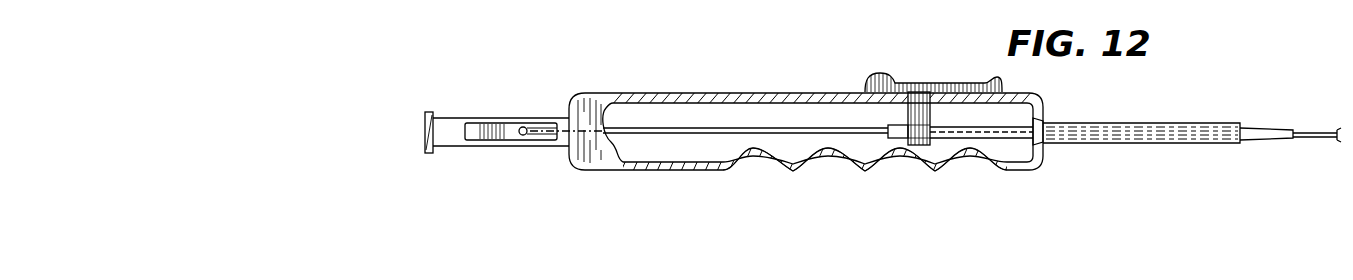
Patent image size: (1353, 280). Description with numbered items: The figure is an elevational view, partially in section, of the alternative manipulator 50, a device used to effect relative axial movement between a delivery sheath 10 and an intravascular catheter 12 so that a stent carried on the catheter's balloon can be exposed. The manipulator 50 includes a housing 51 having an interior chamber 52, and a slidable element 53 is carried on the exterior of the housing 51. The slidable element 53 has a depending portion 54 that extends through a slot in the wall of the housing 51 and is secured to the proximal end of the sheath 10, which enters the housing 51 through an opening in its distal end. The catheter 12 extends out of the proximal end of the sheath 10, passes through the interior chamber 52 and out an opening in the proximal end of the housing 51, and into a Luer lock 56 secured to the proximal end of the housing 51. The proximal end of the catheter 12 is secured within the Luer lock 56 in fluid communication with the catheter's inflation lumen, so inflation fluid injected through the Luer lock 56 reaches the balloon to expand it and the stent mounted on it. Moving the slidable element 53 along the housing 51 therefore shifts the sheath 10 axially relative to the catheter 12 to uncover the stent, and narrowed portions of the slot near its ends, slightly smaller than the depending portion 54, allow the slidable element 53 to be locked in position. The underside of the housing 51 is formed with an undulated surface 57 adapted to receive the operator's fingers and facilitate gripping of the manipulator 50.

The delivery sheath 10 is at (1253, 130).
The intravascular catheter 12 is at (657, 136).
The manipulator 50 is at (790, 92).
The housing 51 is at (680, 168).
The interior chamber 52 is at (655, 102).
The slidable element 53 is at (882, 82).
The depending portion 54 is at (927, 113).
The Luer lock 56 is at (450, 118).
The undulated surface 57 is at (968, 158).